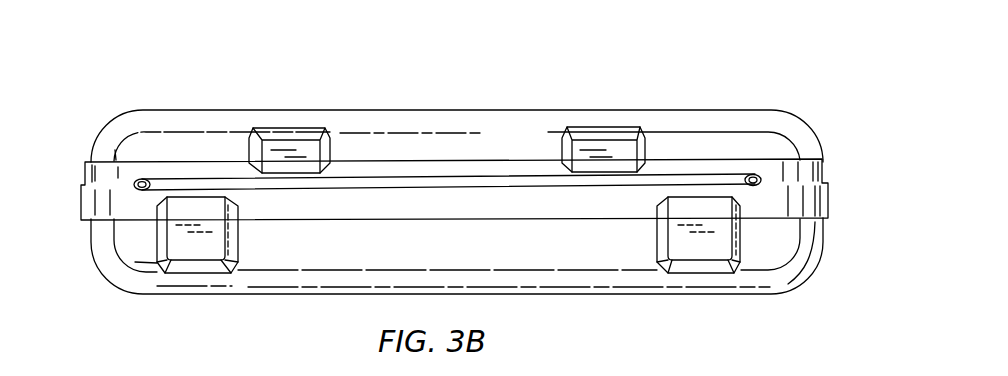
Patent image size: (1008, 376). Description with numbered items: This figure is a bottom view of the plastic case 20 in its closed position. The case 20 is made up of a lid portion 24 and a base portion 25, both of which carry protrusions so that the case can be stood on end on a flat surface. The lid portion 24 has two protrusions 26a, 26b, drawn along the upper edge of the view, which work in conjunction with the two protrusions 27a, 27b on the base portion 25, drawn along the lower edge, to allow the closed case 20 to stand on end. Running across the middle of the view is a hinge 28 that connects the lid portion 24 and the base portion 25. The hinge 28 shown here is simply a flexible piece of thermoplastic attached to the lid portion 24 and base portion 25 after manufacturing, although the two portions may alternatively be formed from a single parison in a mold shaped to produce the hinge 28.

The case 20 is at (466, 197).
The lid portion 24 is at (792, 143).
The base portion 25 is at (785, 246).
The protrusion 26a is at (280, 145).
The protrusion 26b is at (602, 153).
The protrusion 27a is at (190, 245).
The protrusion 27b is at (717, 243).
The hinge 28 is at (217, 180).